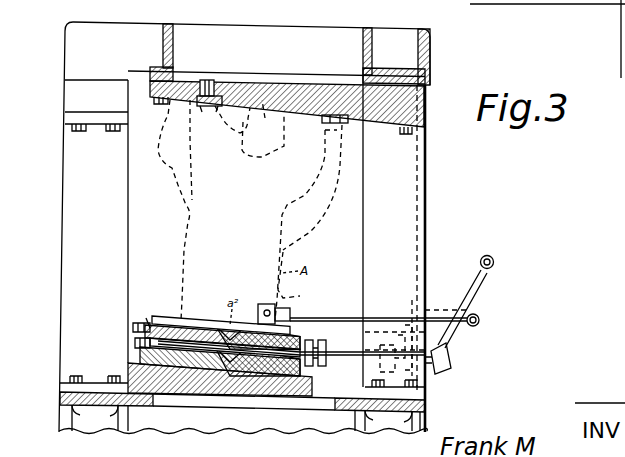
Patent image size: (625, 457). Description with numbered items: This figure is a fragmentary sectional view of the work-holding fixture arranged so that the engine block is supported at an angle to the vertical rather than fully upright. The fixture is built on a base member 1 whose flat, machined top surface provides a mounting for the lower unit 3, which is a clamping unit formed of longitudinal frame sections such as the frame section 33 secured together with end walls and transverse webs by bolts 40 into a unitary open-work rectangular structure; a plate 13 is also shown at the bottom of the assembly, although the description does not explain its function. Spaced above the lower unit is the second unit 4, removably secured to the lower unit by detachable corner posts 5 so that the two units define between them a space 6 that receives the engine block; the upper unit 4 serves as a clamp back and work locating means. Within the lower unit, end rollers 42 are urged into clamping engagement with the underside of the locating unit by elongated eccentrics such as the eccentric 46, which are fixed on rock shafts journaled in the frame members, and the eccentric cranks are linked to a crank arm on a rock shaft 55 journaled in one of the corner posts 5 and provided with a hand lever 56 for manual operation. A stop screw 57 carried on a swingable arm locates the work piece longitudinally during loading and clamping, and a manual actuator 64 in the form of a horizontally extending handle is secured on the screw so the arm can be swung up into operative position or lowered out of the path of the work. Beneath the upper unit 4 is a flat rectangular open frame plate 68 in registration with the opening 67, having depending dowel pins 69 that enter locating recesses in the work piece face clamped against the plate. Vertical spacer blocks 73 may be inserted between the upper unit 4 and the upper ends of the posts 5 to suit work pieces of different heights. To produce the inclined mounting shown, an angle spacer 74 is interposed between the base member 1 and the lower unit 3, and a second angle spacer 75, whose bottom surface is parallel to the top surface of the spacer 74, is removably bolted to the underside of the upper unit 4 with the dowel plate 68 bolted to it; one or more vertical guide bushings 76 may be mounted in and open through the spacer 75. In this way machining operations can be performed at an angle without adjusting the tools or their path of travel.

The base member 1 is at (425, 421).
The unit 3 is at (148, 318).
The second unit 4 is at (438, 61).
The corner posts 5 is at (56, 273).
The space 6 is at (355, 264).
The bottom plate 13 is at (196, 402).
The longitudinal frame section 33 is at (141, 352).
The bolts 40 is at (134, 335).
The end rollers 42 is at (200, 325).
The eccentric 46 is at (168, 317).
The rock shaft 55 is at (335, 350).
The hand lever 56 is at (471, 292).
The stop screw 57 is at (266, 304).
The manual actuator 64 is at (335, 318).
The opening 67 is at (335, 46).
The frame plate 68 is at (236, 118).
The dowel pins 69 is at (208, 108).
The vertical spacer blocks 73 is at (67, 99).
The angle spacer 74 is at (232, 399).
The angle spacer 75 is at (426, 98).
The vertical guide bushings 76 is at (207, 84).